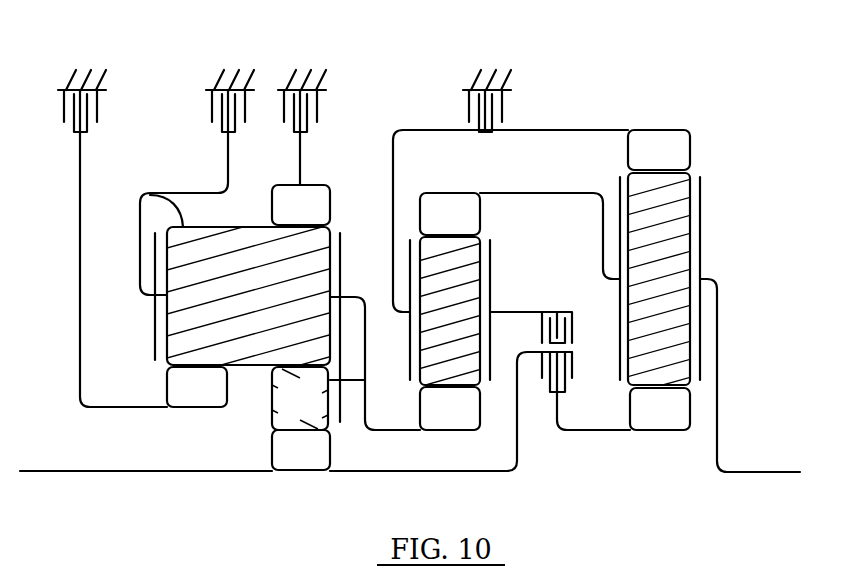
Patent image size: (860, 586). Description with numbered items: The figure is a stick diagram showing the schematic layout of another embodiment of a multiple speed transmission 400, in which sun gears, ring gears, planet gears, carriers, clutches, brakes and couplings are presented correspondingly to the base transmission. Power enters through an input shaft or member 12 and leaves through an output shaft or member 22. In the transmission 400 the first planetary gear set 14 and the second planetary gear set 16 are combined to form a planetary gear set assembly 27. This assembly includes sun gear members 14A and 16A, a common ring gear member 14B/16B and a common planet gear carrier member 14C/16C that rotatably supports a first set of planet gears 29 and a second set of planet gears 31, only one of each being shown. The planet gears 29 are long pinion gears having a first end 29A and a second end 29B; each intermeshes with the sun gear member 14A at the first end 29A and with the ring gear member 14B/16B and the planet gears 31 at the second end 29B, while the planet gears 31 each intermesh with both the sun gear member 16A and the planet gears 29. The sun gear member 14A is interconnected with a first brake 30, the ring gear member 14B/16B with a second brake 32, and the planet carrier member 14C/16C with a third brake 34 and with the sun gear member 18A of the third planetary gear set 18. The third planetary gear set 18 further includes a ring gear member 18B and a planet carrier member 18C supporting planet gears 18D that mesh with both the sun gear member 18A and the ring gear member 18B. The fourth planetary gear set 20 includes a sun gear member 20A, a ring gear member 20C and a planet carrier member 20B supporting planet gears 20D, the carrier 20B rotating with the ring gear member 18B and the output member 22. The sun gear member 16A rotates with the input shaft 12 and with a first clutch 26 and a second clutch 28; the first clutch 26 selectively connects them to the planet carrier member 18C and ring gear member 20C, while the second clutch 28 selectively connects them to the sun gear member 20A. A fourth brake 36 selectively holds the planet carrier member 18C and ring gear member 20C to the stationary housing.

The multiple speed transmission 400 is at (701, 78).
The input shaft or member 12 is at (70, 474).
The first planetary gear set 14 is at (194, 445).
The sun gear member 14A is at (197, 387).
The ring gear member 14B is at (313, 193).
The planet gear carrier member 14C is at (343, 238).
The second planetary gear set 16 is at (322, 410).
The sun gear member 16A is at (257, 434).
The ring gear member 16B is at (353, 159).
The planet gear carrier member 16C is at (425, 287).
The third planetary gear set 18 is at (487, 357).
The sun gear member 18A is at (450, 408).
The ring gear member 18B is at (450, 214).
The planet carrier member 18C is at (490, 268).
The planet gears 18D is at (450, 321).
The fourth planetary gear set 20 is at (698, 326).
The sun gear member 20A is at (660, 409).
The planet carrier member 20B is at (702, 226).
The ring gear member 20C is at (659, 150).
The planet gears 20D is at (659, 284).
The output shaft or member 22 is at (782, 474).
The first clutch 26 is at (572, 330).
The planetary gear set assembly 27 is at (215, 230).
The second clutch 28 is at (573, 367).
The first set of planet gears 29 is at (252, 370).
The first end 29A is at (150, 195).
The second end 29B is at (250, 302).
The first brake 30 is at (100, 107).
The second set of planet gears 31 is at (300, 398).
The second brake 32 is at (283, 108).
The third brake 34 is at (213, 110).
The fourth brake 36 is at (500, 106).